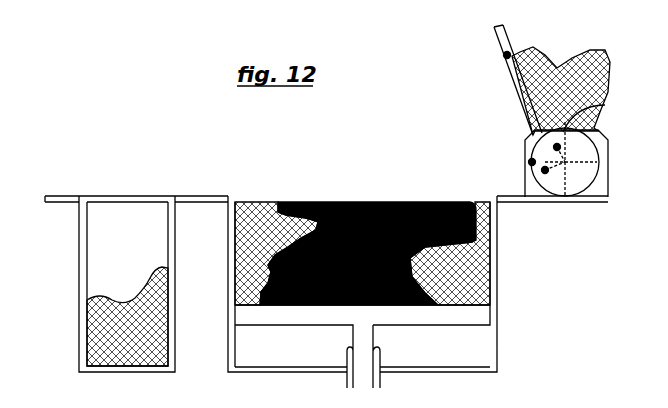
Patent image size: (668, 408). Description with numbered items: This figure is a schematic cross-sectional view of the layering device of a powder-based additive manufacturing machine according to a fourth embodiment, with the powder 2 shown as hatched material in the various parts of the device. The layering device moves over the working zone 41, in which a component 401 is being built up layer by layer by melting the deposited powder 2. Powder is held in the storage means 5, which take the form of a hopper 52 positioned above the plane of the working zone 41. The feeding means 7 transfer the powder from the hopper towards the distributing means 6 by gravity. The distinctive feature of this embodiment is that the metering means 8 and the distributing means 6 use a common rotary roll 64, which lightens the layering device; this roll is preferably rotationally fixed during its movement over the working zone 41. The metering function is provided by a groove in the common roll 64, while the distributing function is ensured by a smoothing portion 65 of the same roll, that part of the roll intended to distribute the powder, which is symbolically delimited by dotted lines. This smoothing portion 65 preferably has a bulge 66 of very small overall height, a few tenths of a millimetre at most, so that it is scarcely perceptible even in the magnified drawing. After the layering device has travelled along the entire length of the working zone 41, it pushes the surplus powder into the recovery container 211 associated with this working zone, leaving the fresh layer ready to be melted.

The solder / bonding material 2 is at (135, 341).
The storage means 5 is at (487, 83).
The distributing means 6 is at (507, 172).
The feeding means 7 is at (507, 128).
The metering means 8 is at (497, 150).
The working zone 41 is at (378, 186).
The hopper 52 is at (505, 54).
The common rotary roll 64 is at (556, 143).
The smoothing portion 65 is at (545, 173).
The bulge 66 is at (532, 165).
The recovery container 211 is at (146, 243).
The component 401 is at (388, 251).